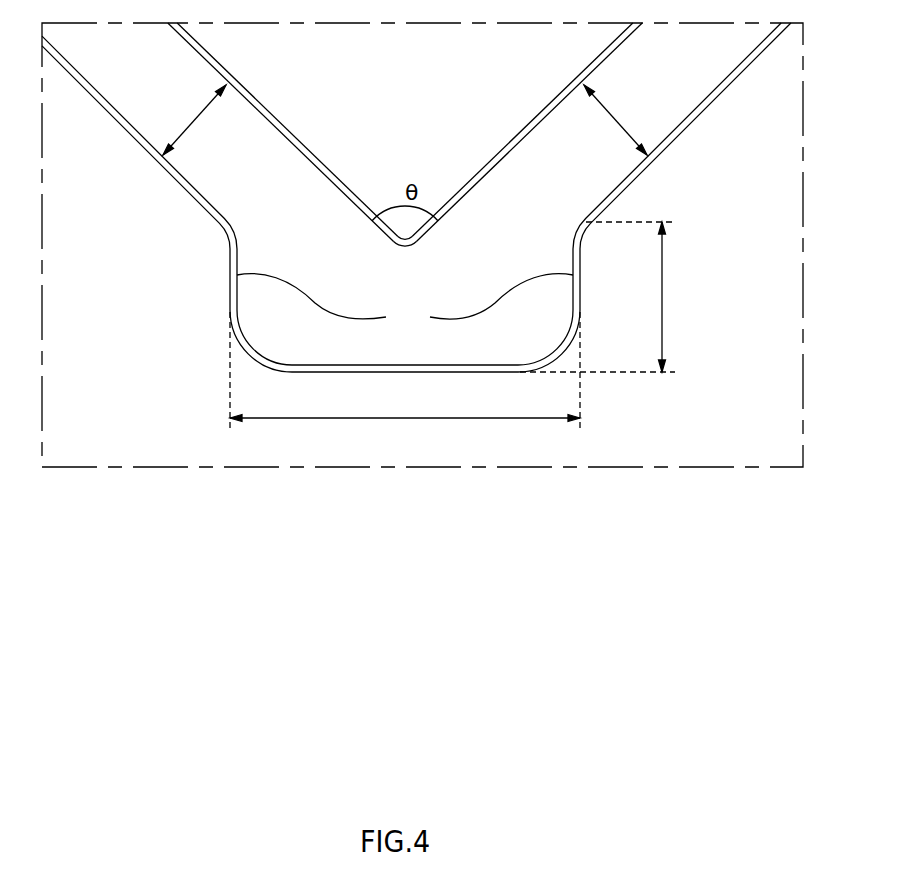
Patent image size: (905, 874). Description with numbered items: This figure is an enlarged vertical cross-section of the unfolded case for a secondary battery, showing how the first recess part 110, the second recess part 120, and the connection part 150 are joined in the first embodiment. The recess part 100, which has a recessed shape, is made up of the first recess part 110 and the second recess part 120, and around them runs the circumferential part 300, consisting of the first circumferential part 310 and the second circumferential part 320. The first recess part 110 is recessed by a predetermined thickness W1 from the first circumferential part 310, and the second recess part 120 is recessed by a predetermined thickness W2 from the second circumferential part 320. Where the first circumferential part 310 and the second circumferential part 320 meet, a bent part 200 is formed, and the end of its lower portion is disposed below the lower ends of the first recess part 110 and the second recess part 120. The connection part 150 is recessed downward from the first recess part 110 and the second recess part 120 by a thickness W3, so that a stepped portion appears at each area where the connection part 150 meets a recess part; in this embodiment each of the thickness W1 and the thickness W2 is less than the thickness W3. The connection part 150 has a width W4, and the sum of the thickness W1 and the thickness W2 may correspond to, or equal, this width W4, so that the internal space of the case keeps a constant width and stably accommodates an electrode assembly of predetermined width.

The recess part 100 is at (730, 597).
The first recess part 110 is at (136, 139).
The second recess part 120 is at (673, 137).
The connection part 150 is at (404, 364).
The bent part 200 is at (405, 237).
The circumferential part 300 is at (730, 502).
The first circumferential part 310 is at (264, 116).
The second circumferential part 320 is at (546, 116).
The thickness W1 is at (194, 120).
The thickness W2 is at (615, 120).
The thickness W3 is at (609, 297).
The width W4 is at (405, 381).